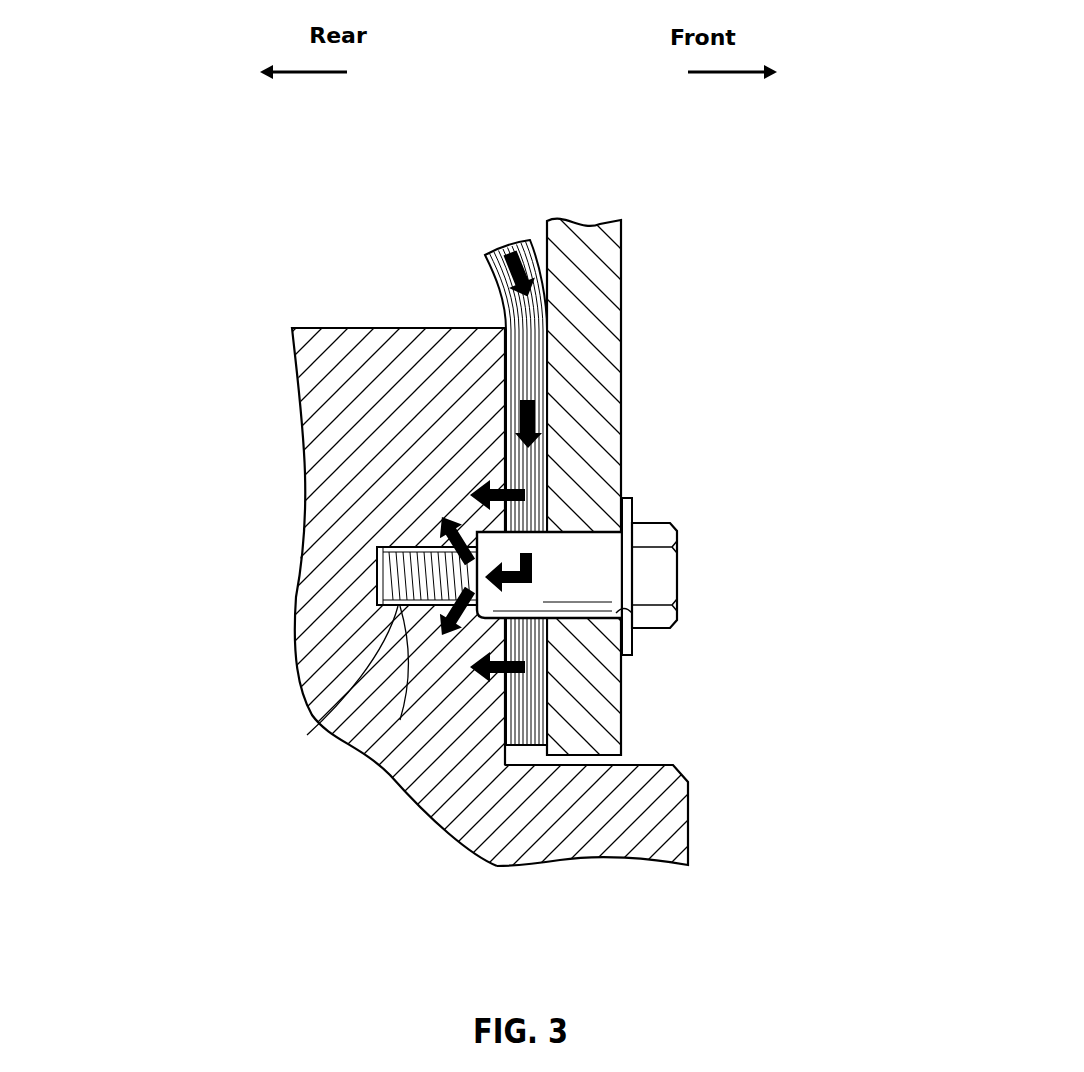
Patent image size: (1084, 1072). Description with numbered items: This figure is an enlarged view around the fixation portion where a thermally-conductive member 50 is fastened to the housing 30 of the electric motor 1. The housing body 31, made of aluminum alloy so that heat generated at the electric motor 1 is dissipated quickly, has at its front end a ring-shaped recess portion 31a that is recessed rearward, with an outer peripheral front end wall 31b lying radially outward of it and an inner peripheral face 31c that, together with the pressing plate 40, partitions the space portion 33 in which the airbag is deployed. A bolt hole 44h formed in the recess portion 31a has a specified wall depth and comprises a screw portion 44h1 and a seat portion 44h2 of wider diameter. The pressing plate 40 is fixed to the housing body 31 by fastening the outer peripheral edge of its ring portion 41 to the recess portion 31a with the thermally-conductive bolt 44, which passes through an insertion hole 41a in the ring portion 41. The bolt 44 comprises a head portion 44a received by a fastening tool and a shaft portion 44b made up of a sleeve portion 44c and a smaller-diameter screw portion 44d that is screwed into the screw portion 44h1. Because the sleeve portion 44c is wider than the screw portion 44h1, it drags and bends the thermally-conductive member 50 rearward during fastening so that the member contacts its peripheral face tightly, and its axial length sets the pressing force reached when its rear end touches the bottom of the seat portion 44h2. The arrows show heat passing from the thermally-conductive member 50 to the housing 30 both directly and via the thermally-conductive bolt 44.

The electric motor 1 is at (656, 435).
The housing 30 is at (519, 547).
The housing body 31 is at (300, 326).
The recess portion 31a is at (507, 749).
The outer peripheral front end wall 31b is at (688, 806).
The inner peripheral face 31c is at (343, 326).
The space portion 33 is at (414, 280).
The pressing plate 40 is at (656, 490).
The ring portion 41 is at (622, 289).
The insertion hole 41a is at (632, 618).
The thermally-conductive bolt 44 is at (505, 578).
The head portion 44a is at (672, 575).
The shaft portion 44b is at (580, 627).
The sleeve portion 44c is at (566, 545).
The screw portion 44d is at (400, 547).
The bolt hole 44h is at (316, 728).
The screw portion 44h1 is at (307, 735).
The seat portion 44h2 is at (376, 716).
The thermally-conductive member 50 is at (527, 242).